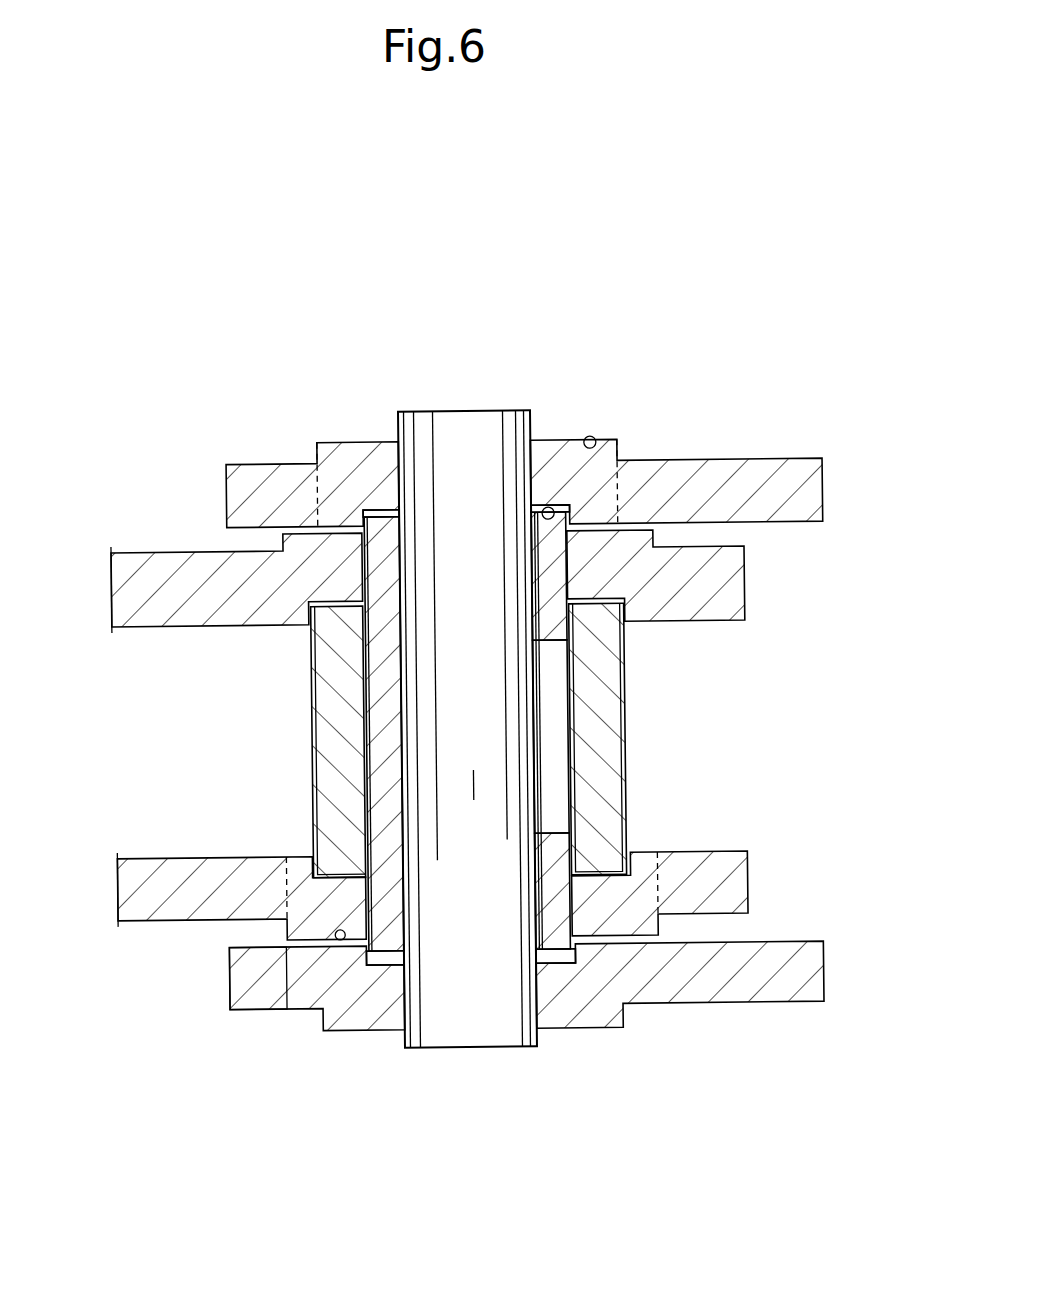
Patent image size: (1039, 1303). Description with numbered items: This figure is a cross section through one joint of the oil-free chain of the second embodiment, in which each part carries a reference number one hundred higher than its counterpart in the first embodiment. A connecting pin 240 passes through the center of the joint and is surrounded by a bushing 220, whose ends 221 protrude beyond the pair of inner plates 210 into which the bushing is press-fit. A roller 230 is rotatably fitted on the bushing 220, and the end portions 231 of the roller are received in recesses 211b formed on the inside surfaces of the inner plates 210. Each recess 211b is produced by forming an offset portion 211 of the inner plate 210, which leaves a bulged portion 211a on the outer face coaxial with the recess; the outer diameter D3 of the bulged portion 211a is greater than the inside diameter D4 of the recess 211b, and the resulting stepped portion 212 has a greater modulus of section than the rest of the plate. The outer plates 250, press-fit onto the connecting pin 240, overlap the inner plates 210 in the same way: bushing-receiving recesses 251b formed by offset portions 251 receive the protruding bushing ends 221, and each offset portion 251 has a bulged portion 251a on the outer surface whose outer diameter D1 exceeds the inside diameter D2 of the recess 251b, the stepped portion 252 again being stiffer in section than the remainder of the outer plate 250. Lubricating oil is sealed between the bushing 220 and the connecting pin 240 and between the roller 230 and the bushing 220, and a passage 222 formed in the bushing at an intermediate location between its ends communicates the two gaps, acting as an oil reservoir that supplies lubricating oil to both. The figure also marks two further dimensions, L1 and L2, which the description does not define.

The inner plate 210 is at (722, 597).
The offset portion of inner plate 211 is at (322, 545).
The bulged portion of inner plate 211a is at (336, 939).
The recess of inner plate 211b is at (235, 970).
The stepped portion of inner plate 212 is at (296, 892).
The bushing 220 is at (385, 752).
The bushing end 221 is at (382, 525).
The passage 222 is at (560, 757).
The roller 230 is at (612, 707).
The end portion of roller 231 is at (330, 616).
The connecting pin 240 is at (466, 1008).
The outer plate 250 is at (773, 478).
The offset portion of outer plate 251 is at (577, 1000).
The bulged portion of outer plate 251a is at (596, 437).
The bushing-receiving recess 251b is at (554, 508).
The stepped portion of outer plate 252 is at (338, 458).
The outer diameter of bulged portion of outer plate D1 is at (619, 441).
The inside diameter of recess of outer plate D2 is at (574, 506).
The outer diameter of bulged portion of inner plate D3 is at (656, 937).
The inside diameter of recess of inner plate D4 is at (309, 938).
The gap L1 is at (676, 535).
The gap L2 is at (641, 638).